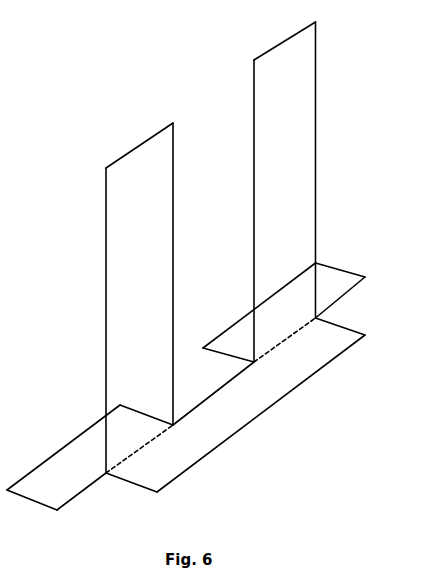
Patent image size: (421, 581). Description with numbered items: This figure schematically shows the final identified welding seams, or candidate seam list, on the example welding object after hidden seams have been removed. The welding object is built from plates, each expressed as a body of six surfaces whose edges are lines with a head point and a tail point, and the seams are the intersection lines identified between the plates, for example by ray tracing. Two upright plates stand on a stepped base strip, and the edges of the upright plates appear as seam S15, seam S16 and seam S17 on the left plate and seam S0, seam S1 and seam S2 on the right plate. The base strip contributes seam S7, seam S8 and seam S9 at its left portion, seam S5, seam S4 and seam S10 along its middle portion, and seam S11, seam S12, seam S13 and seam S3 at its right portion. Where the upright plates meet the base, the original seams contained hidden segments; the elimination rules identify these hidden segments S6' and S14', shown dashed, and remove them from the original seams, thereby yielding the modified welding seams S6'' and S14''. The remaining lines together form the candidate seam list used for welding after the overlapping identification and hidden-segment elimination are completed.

The welding seam S0 is at (239, 211).
The welding seam S1 is at (285, 37).
The welding seam S2 is at (300, 170).
The welding seam S3 is at (341, 330).
The welding seam S4 is at (261, 413).
The welding seam S5 is at (131, 487).
The hidden segment S6' is at (139, 449).
The modified welding seam S6'' is at (81, 494).
The welding seam S7 is at (32, 505).
The welding seam S8 is at (63, 447).
The welding seam S9 is at (146, 409).
The welding seam S10 is at (213, 393).
The welding seam S11 is at (224, 360).
The welding seam S12 is at (259, 305).
The welding seam S13 is at (341, 262).
The hidden segment S14' is at (285, 342).
The modified welding seam S14'' is at (349, 297).
The welding seam S15 is at (86, 320).
The welding seam S16 is at (139, 141).
The welding seam S17 is at (153, 274).